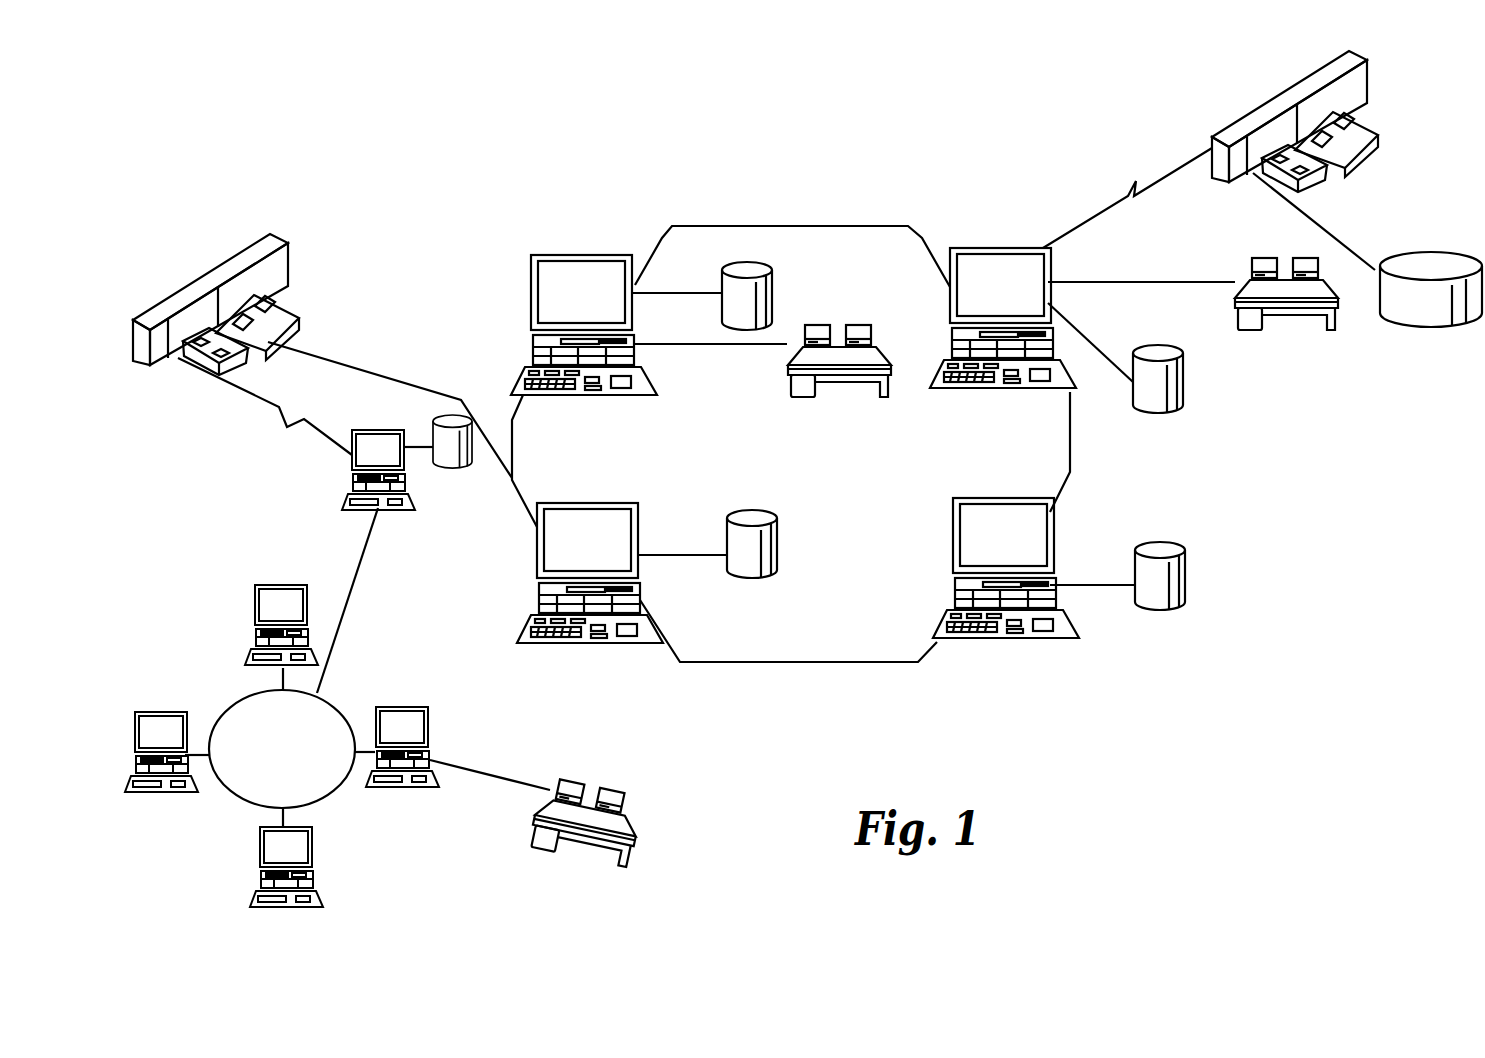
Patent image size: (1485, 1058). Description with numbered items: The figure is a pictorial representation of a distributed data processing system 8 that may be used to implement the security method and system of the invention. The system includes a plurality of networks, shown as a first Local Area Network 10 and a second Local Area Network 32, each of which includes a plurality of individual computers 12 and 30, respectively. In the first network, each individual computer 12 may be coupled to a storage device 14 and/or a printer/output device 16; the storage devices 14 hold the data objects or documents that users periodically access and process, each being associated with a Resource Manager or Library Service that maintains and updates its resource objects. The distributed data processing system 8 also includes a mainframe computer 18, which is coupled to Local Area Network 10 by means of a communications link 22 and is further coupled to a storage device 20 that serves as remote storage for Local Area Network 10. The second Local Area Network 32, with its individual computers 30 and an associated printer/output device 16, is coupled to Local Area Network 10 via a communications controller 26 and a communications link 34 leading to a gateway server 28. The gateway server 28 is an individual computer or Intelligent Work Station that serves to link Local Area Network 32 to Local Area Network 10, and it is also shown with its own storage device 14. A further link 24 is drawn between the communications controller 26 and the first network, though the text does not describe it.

The distributed data processing system 8 is at (816, 173).
The Local Area Network 10 is at (828, 663).
The individual computer 12 is at (600, 255).
The storage device 14 is at (771, 284).
The printer/output device 16 is at (838, 318).
The mainframe computer 18 is at (1284, 90).
The storage device 20 is at (1460, 257).
The communications link 22 is at (1168, 175).
The communications link 24 is at (383, 375).
The communications controller 26 is at (286, 244).
The gateway server 28 is at (376, 428).
The individual computer 30 is at (286, 585).
The Local Area Network 32 is at (235, 798).
The communications link 34 is at (294, 428).